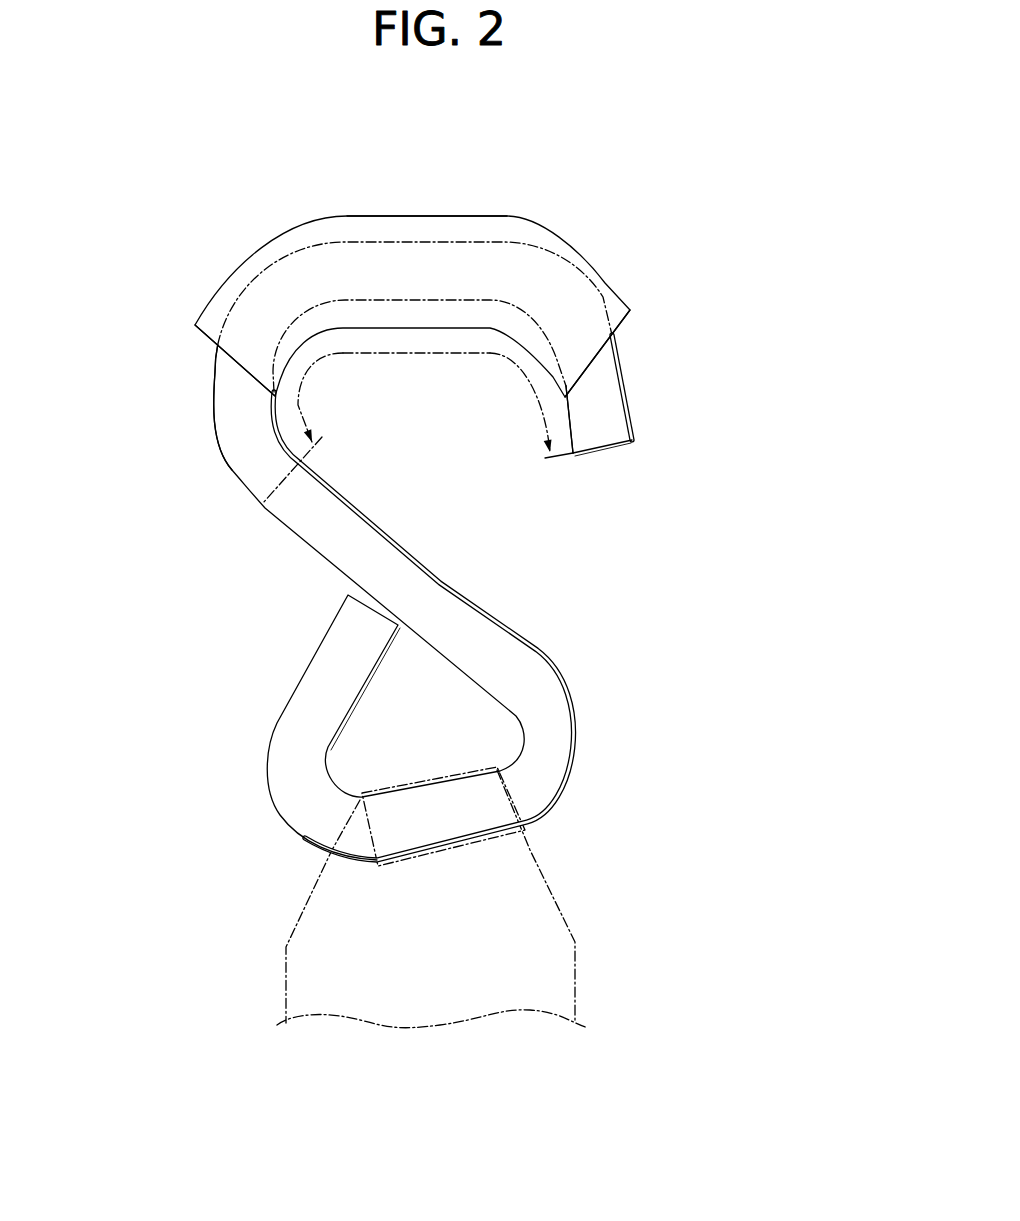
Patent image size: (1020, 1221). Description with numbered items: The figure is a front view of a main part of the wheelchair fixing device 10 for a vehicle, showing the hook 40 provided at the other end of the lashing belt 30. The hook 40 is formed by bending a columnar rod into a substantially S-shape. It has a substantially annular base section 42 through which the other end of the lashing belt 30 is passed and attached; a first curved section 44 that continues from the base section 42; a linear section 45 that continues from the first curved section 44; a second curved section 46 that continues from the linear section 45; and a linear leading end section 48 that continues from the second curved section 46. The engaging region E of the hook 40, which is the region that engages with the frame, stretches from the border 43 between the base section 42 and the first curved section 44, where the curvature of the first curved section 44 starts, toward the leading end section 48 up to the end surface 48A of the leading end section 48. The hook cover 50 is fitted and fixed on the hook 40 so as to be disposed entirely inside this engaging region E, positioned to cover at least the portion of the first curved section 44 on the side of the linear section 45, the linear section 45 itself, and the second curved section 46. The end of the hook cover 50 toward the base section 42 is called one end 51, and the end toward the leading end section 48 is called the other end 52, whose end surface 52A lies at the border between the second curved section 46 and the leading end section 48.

The hook 10 is at (234, 222).
The lashing belt 30 is at (577, 960).
The hook 40 is at (439, 508).
The base section 42 is at (312, 813).
The border 43 is at (265, 508).
The first curved section 44 is at (220, 393).
The linear section 45 is at (432, 262).
The second curved section 46 is at (578, 325).
The leading end section 48 is at (595, 437).
The end surface 48A is at (623, 448).
The hook cover 50 is at (423, 284).
The one end 51 is at (208, 343).
The other end 52 is at (622, 323).
The end surface 52A is at (570, 410).
The engaging region E is at (400, 353).